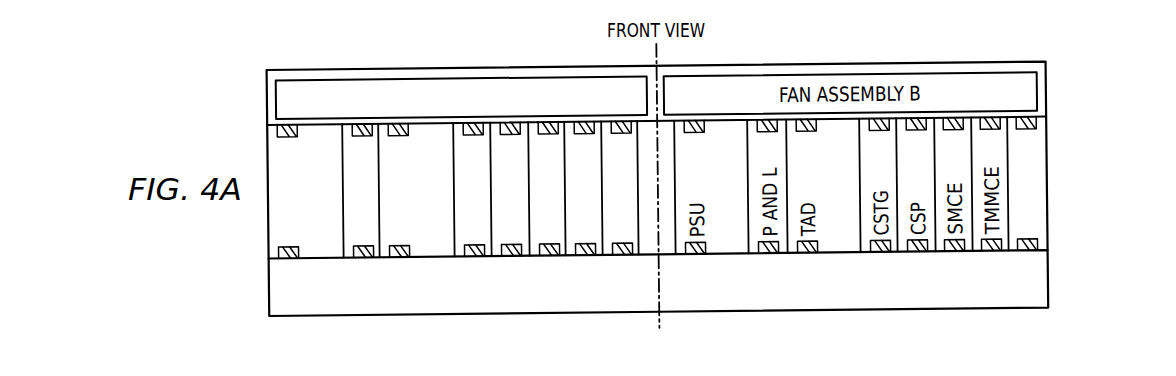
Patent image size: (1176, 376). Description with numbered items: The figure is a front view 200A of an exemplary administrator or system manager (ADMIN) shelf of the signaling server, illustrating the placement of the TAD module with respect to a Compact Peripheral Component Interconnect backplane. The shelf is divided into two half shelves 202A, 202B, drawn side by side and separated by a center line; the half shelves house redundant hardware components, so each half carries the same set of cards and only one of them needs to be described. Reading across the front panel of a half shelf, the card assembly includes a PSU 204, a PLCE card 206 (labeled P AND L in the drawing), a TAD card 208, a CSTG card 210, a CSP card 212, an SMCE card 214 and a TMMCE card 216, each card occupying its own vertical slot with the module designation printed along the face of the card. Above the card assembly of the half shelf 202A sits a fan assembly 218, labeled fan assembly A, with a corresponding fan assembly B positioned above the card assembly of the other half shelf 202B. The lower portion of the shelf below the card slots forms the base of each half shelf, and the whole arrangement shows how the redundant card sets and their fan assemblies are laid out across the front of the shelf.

The front view of ADMIN shelf 200A is at (1088, 92).
The half shelf 202A is at (267, 288).
The half shelf 202B is at (1049, 290).
The PSU 204 is at (317, 258).
The PLCE card 206 is at (380, 258).
The TAD card 208 is at (434, 258).
The CSTG card 210 is at (487, 258).
The CSP card 212 is at (524, 258).
The SMCE card 214 is at (558, 258).
The TMMCE card 216 is at (598, 258).
The fan assembly 218 is at (277, 100).